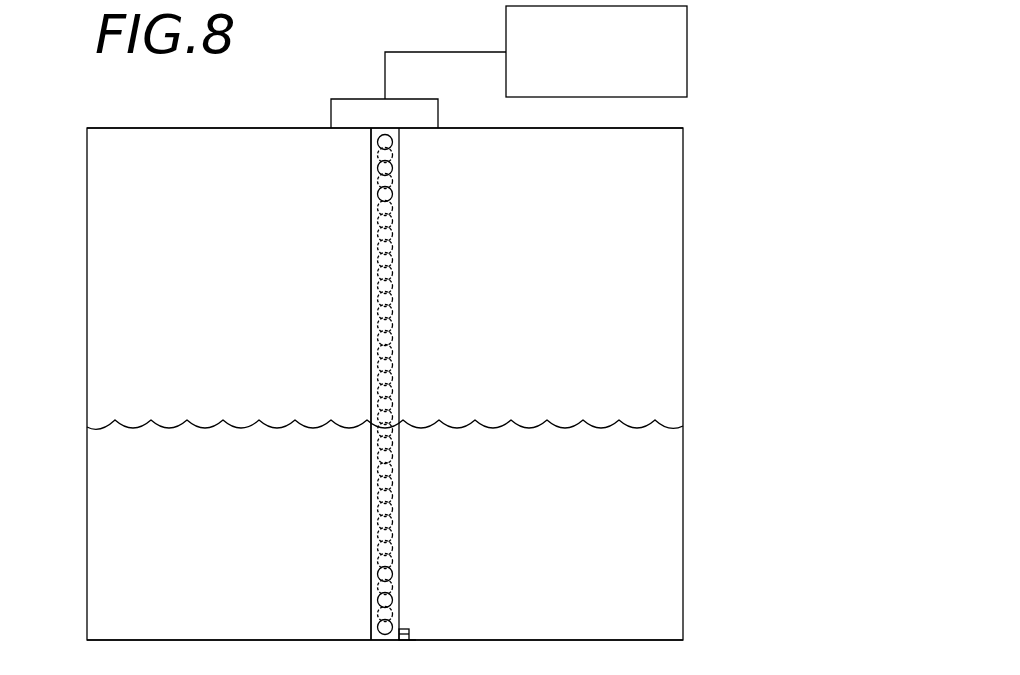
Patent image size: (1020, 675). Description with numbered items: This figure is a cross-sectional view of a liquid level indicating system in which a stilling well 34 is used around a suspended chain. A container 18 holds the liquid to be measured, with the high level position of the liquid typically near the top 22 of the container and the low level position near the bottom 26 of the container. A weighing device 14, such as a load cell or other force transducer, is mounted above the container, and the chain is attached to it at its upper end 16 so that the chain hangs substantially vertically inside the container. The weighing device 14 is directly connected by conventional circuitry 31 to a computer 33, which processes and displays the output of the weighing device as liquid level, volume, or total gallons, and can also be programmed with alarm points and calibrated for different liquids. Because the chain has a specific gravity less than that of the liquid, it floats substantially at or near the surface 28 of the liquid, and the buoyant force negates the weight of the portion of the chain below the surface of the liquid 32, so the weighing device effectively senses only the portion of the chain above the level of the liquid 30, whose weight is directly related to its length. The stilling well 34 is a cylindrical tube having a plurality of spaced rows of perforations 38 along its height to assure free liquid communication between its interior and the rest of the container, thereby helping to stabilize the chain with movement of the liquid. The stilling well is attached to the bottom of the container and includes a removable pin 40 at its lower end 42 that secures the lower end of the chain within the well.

The weighing device 14 is at (350, 99).
The end of the chain 16 is at (388, 132).
The container 18 is at (683, 318).
The top of the container 22 is at (153, 128).
The bottom of the container 26 is at (277, 640).
The surface of the liquid 28 is at (110, 423).
The portion of the chain above the level of the liquid 30 is at (390, 240).
The conventional circuitry 31 is at (442, 52).
The portion of the chain below the surface of the liquid 32 is at (390, 548).
The computer 33 is at (687, 40).
The stilling well 34 is at (399, 297).
The perforations 38 is at (378, 194).
The removable pin 40 is at (409, 632).
The lower end of the stilling well 42 is at (412, 640).